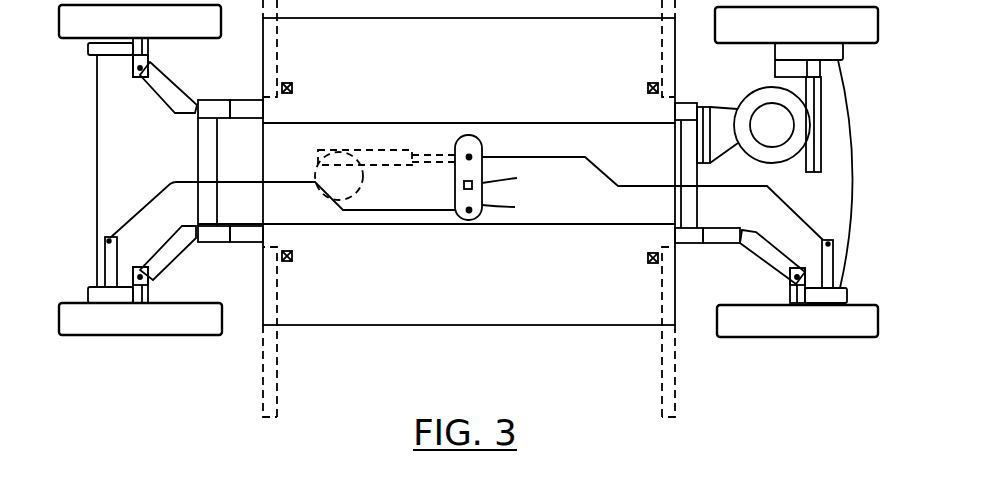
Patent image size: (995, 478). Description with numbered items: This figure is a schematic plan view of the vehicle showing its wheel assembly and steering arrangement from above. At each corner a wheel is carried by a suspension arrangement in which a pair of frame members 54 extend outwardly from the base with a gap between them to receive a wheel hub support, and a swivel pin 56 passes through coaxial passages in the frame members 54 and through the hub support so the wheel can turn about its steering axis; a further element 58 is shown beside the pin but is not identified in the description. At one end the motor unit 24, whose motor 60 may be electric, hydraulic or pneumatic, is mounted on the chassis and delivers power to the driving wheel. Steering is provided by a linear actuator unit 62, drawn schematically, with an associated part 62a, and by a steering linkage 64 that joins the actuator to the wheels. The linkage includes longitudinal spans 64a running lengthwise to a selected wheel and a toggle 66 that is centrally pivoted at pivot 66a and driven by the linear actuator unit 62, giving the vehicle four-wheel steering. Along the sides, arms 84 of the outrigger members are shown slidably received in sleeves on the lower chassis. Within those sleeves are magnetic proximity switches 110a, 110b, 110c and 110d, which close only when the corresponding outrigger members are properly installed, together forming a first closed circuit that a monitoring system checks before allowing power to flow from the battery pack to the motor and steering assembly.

The motor unit 24 is at (858, 111).
The frame members 54 is at (180, 95).
The swivel pin 56 is at (138, 77).
The support strut 58 is at (132, 278).
The motor 60 is at (790, 160).
The linear actuator unit 62 is at (360, 150).
The battery connector 62a is at (353, 190).
The steering linkage 64 is at (470, 135).
The longitudinal spans 64a is at (545, 157).
The toggle 66 is at (512, 208).
The central pivot 66a is at (520, 180).
The arm 84 is at (278, 400).
The magnetic proximity switch 110a is at (292, 262).
The magnetic proximity switch 110b is at (646, 258).
The magnetic proximity switch 110c is at (293, 88).
The magnetic proximity switch 110d is at (648, 86).